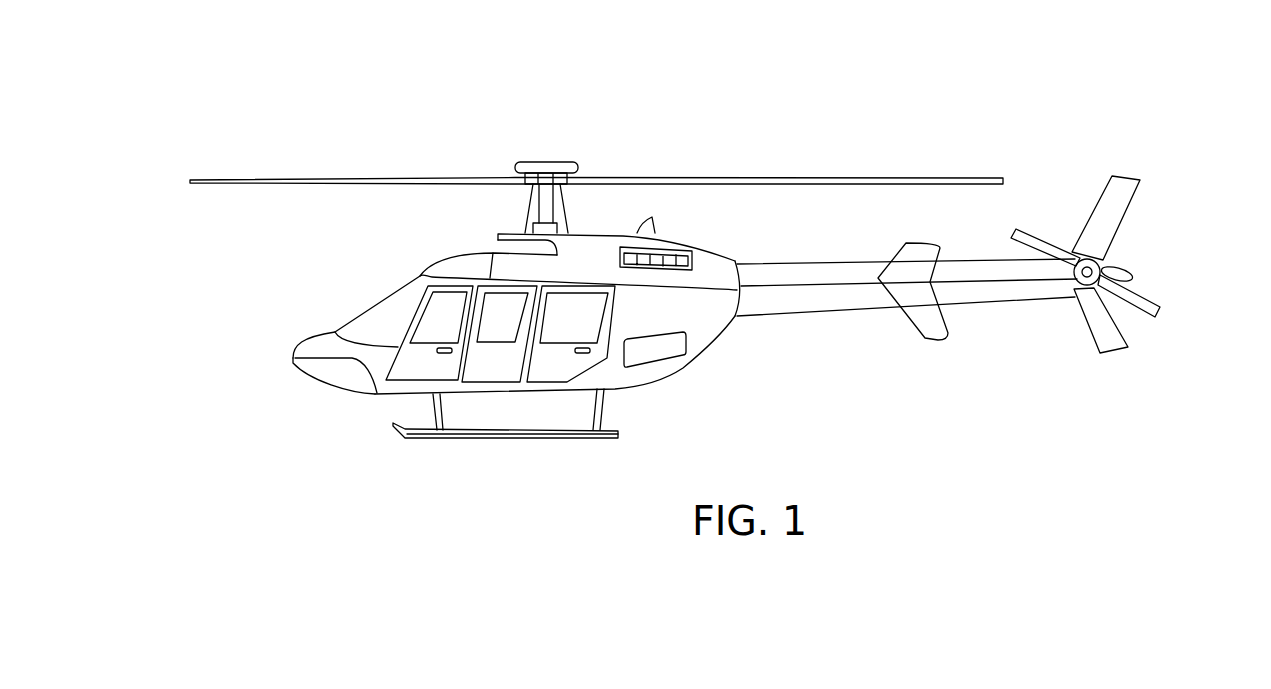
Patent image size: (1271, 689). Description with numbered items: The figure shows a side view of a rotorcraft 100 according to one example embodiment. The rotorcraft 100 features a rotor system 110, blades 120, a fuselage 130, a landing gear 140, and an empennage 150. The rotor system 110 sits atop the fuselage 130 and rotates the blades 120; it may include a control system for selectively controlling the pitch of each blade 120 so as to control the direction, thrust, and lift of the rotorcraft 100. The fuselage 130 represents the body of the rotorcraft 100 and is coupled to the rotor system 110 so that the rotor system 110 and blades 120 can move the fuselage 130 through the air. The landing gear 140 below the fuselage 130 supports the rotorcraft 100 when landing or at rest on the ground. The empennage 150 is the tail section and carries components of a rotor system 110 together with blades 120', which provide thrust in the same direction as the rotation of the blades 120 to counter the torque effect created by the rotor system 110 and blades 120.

The rotorcraft 100 is at (394, 114).
The rotor system 110 is at (546, 162).
The blades 120 is at (596, 152).
The blades 120' is at (1129, 264).
The fuselage 130 is at (332, 390).
The landing gear 140 is at (483, 438).
The empennage 150 is at (818, 310).